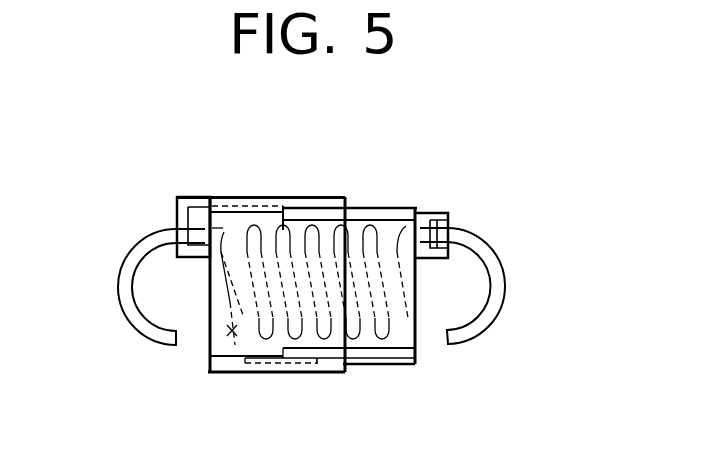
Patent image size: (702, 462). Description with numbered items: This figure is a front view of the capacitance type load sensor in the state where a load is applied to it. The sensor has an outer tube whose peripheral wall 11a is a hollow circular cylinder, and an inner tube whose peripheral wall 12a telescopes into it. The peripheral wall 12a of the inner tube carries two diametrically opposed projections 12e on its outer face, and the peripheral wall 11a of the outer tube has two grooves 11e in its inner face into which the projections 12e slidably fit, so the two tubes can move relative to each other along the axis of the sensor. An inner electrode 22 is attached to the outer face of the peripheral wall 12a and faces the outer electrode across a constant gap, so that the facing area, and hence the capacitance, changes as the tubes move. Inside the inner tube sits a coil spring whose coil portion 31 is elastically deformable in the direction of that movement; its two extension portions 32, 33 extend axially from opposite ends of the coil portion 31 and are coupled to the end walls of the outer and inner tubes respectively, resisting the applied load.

The peripheral wall 11a is at (265, 197).
The grooves 11e is at (228, 204).
The peripheral wall 12a is at (420, 347).
The projections 12e is at (363, 206).
The inner electrode 22 is at (392, 220).
The coil portion 31 is at (227, 350).
The extension portion 32 is at (140, 246).
The extension portion 33 is at (500, 273).